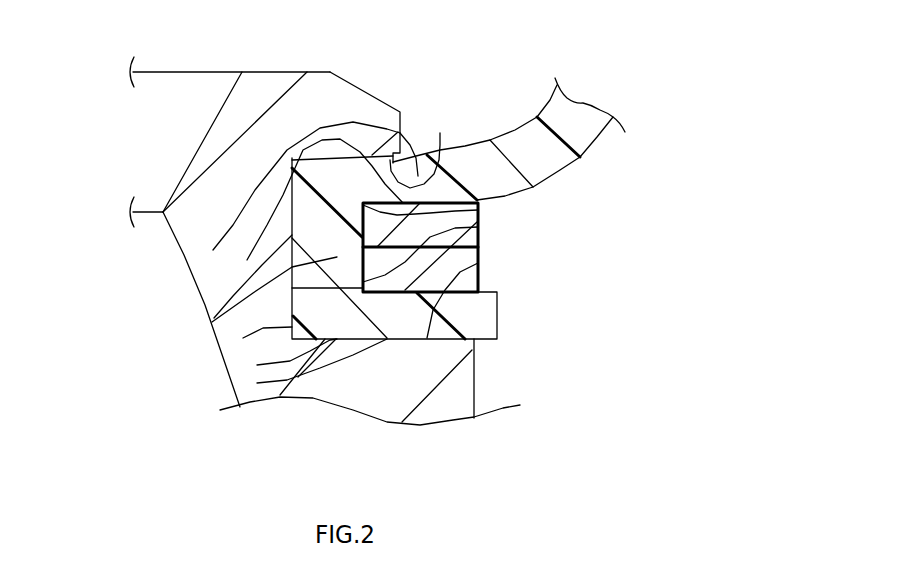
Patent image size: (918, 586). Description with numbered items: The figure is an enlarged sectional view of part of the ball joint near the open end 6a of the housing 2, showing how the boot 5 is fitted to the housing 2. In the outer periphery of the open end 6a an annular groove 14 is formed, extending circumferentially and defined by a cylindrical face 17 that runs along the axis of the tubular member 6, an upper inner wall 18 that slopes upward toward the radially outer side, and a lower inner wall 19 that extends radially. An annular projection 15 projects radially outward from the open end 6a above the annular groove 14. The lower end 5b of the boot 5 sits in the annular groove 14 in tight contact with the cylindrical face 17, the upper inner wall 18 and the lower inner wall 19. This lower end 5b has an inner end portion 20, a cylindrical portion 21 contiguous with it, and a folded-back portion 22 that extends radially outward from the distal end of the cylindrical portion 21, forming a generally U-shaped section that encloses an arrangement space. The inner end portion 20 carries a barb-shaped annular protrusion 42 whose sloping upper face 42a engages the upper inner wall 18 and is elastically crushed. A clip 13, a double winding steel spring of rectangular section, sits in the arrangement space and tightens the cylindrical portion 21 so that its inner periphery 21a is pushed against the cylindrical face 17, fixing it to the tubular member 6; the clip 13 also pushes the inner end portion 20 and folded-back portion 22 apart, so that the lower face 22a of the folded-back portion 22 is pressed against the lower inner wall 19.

The housing 2 is at (484, 363).
The boot 5 is at (599, 146).
The lower end of the boot 5b is at (95, 253).
The tubular member 6 is at (455, 397).
The open end 6a is at (224, 103).
The clip 13 is at (488, 277).
The annular groove 14 is at (555, 195).
The annular projection 15 is at (360, 97).
The cylindrical face 17 is at (478, 232).
The upper inner wall 18 is at (478, 211).
The lower inner wall 19 is at (478, 262).
The inner end portion 20 is at (213, 250).
The cylindrical portion 21 is at (212, 322).
The inner periphery of the cylindrical portion 21a is at (243, 338).
The folded-back portion 22 is at (257, 383).
The lower face of the folded-back portion 22a is at (257, 365).
The annular protrusion 42 is at (440, 133).
The upper face of the annular protrusion 42a is at (247, 260).